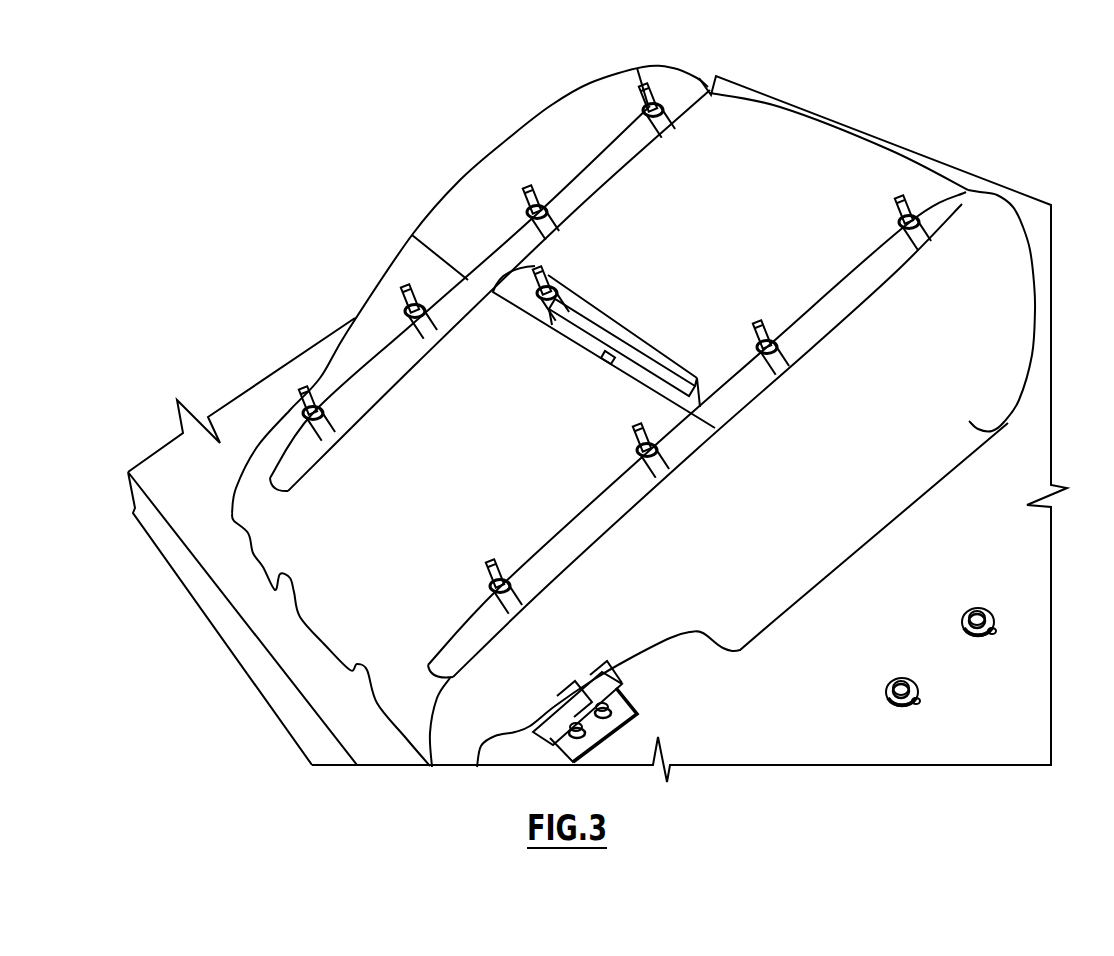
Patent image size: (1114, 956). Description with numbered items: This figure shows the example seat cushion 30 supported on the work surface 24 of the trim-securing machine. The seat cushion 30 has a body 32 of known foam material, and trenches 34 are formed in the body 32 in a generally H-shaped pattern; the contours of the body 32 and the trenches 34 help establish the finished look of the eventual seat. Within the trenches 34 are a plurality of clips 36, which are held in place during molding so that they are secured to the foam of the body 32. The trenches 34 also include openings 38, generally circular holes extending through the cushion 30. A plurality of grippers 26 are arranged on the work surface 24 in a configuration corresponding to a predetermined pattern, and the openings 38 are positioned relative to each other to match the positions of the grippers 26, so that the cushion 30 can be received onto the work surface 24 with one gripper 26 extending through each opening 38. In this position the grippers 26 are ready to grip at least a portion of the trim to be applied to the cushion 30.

The work surface 24 is at (1000, 556).
The grippers 26 is at (885, 240).
The seat cushion 30 is at (548, 100).
The body 32 is at (1005, 427).
The trenches 34 is at (683, 107).
The clips 36 is at (618, 347).
The openings 38 is at (585, 343).